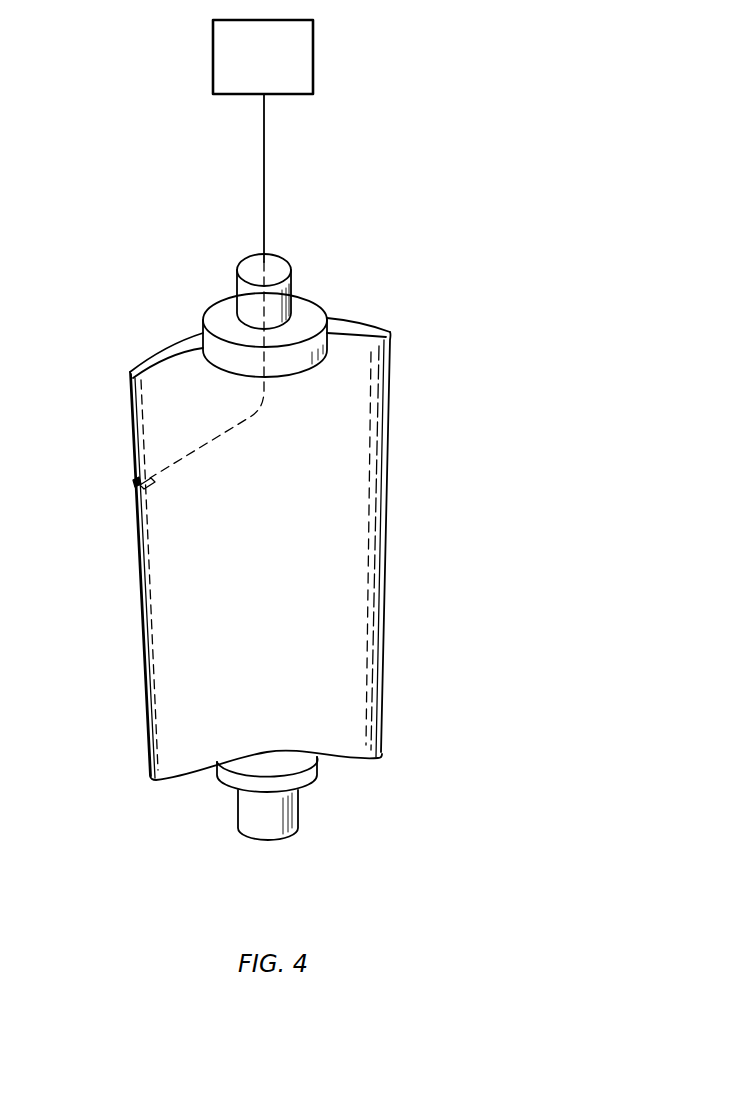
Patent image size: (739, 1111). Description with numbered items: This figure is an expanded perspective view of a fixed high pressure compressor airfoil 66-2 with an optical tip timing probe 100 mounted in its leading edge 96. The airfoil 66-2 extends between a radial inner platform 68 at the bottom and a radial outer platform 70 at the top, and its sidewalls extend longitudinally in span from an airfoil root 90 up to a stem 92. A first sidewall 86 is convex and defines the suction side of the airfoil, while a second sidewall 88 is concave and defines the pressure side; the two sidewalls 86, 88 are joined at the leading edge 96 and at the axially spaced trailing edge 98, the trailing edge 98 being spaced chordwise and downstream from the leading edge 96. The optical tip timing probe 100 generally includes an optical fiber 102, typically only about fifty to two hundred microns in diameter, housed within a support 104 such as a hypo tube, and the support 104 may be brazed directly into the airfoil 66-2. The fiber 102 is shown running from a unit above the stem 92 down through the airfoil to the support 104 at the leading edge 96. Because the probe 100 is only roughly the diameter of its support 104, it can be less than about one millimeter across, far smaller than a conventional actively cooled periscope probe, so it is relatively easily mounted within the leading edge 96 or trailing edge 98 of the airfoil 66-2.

The airfoil 66-2 is at (487, 505).
The radial inner platform 68 is at (285, 765).
The radial outer platform 70 is at (313, 312).
The first sidewall 86 is at (353, 315).
The second sidewall 88 is at (348, 334).
The airfoil root 90 is at (280, 743).
The stem 92 is at (292, 290).
The leading edge 96 is at (140, 638).
The trailing edge 98 is at (385, 610).
The optical tip timing probe 100 is at (113, 470).
The optical fiber 102 is at (264, 160).
The support 104 is at (150, 482).